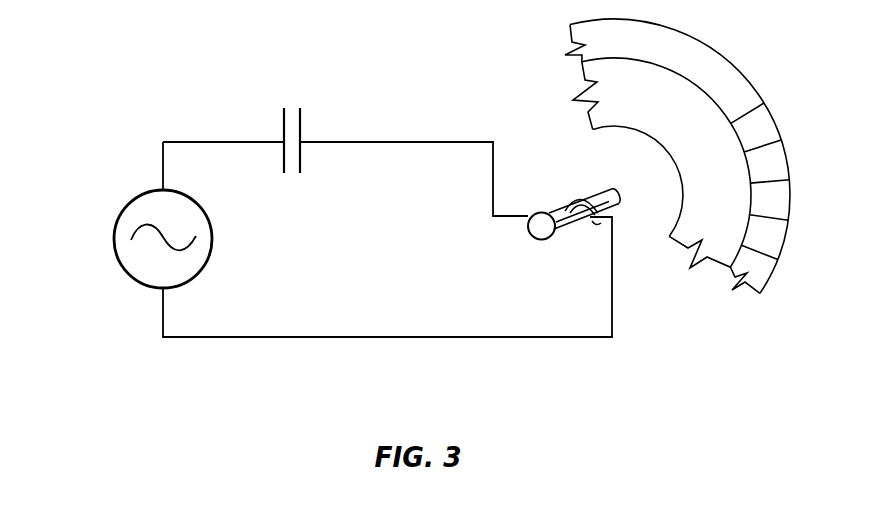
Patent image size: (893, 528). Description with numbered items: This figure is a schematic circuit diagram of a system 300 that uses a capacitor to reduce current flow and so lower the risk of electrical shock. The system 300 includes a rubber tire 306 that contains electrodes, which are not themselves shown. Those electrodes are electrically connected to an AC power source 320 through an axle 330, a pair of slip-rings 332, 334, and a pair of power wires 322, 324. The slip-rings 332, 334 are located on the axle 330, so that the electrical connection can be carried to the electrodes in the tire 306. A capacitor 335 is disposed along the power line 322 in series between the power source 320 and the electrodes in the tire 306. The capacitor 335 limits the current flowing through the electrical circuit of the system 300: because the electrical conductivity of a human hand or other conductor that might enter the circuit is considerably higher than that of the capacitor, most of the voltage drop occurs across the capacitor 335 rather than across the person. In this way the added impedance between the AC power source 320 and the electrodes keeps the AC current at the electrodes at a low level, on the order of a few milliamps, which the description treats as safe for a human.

The system 300 is at (201, 27).
The rubber tire 306 is at (582, 78).
The AC power source 320 is at (120, 221).
The power wire 322 is at (428, 140).
The power wire 324 is at (403, 340).
The axle 330 is at (613, 206).
The slip-ring 332 is at (540, 222).
The slip-ring 334 is at (576, 198).
The capacitor 335 is at (284, 118).